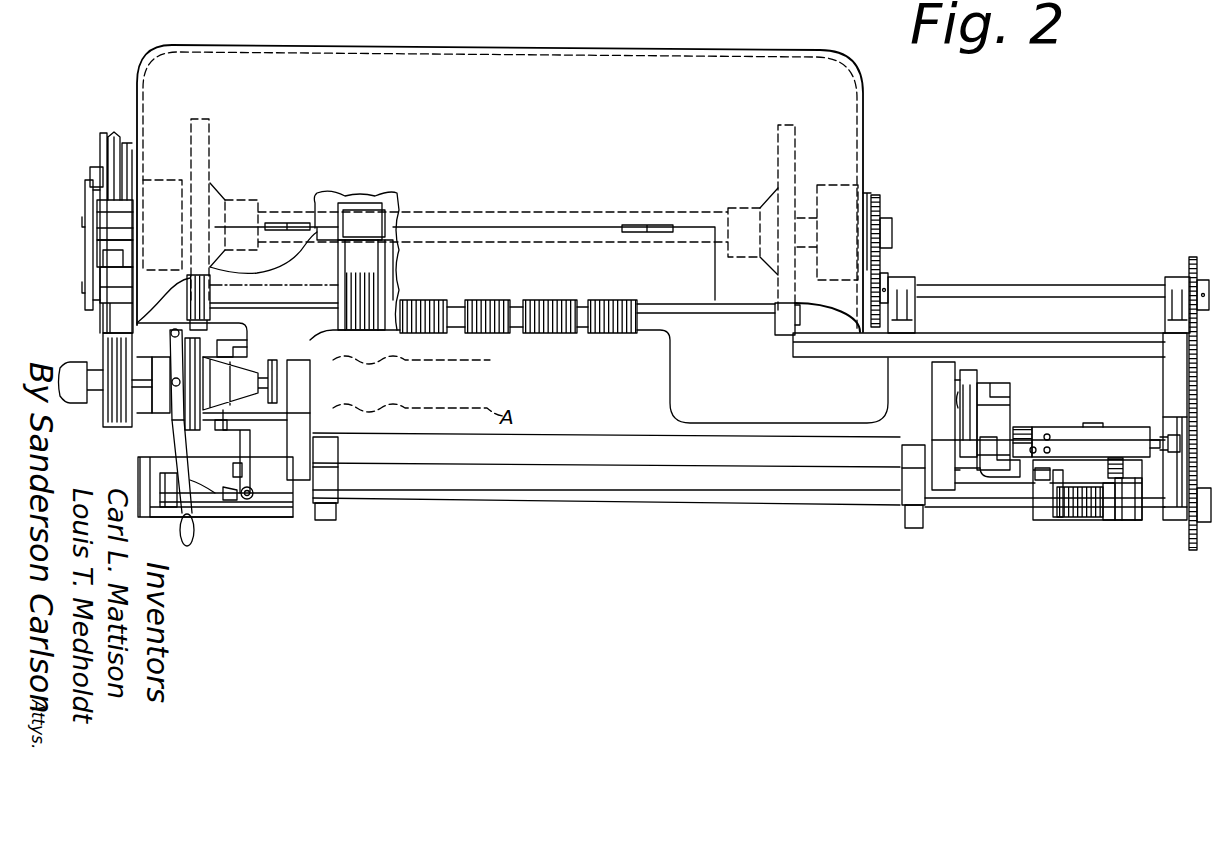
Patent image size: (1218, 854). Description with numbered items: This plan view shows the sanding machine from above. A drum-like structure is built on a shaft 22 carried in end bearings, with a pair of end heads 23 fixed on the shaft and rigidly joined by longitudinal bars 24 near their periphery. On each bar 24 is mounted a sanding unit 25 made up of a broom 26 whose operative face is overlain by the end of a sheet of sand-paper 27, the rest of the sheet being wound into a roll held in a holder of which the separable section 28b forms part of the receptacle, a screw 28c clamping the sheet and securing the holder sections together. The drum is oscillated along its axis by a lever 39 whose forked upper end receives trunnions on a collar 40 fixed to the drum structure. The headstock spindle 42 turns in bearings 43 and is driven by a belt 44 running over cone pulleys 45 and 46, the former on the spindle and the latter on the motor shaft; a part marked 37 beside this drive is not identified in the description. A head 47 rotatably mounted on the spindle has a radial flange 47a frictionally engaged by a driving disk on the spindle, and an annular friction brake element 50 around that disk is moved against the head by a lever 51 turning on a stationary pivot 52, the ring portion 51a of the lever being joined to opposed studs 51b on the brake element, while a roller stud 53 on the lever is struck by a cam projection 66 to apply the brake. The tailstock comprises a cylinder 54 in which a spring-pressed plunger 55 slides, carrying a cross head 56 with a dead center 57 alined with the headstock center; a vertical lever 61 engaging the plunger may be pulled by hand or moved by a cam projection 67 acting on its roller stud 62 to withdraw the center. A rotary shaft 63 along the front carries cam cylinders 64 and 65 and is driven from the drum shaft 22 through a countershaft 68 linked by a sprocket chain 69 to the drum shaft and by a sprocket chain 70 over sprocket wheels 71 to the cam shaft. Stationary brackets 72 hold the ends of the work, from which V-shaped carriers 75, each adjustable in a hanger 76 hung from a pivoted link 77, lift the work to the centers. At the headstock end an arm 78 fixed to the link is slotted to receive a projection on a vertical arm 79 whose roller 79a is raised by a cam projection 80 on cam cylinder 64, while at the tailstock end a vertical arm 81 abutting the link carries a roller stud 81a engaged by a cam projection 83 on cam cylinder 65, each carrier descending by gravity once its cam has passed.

The shaft 22 is at (553, 213).
The end heads 23 is at (209, 121).
The longitudinal bars 24 is at (300, 293).
The sanding unit 25 is at (375, 215).
The brush or broom 26 is at (467, 329).
The sheet of sand-paper 27 is at (600, 330).
The holder section 28b is at (352, 197).
The screw 28c is at (365, 207).
The plate 37 is at (90, 202).
The lever 39 is at (152, 151).
The collar 40 is at (117, 212).
The spindle 42 is at (146, 398).
The bearings 43 is at (157, 356).
The belt 44 is at (107, 330).
The cone pulley 45 is at (120, 410).
The cone pulley 46 is at (118, 137).
The head 47 is at (232, 373).
The radial flange 47a is at (223, 430).
The annular friction brake element 50 is at (187, 415).
The lever 51 is at (180, 532).
The ring portion 51a is at (172, 425).
The studs 51b is at (180, 380).
The stationary pivot 52 is at (175, 328).
The roller stud 53 is at (215, 502).
The cylinder 54 is at (1070, 426).
The plunger 55 is at (1027, 428).
The cross head 56 is at (992, 392).
The dead center 57 is at (980, 386).
The vertical lever 61 is at (1116, 458).
The roller stud 62 is at (1130, 512).
The rotary shaft 63 is at (615, 504).
The cam cylinder 64 is at (219, 517).
The cam cylinder 65 is at (1085, 517).
The cam projection 66 is at (167, 507).
The cam projection 67 is at (1109, 516).
The countershaft 68 is at (1027, 286).
The sprocket chain 69 is at (880, 263).
The sprocket chain 70 is at (1193, 257).
The sprocket wheels 71 is at (1189, 270).
The stationary brackets 72 is at (340, 478).
The V-shaped carriers 75 is at (300, 360).
The hanger 76 is at (932, 428).
The link 77 is at (990, 478).
The arm 78 is at (258, 440).
The vertical arm 79 is at (233, 468).
The roller 79a is at (252, 500).
The cam projection 80 is at (232, 500).
The vertical arm 81 is at (1076, 460).
The roller stud 81a is at (1040, 476).
The cam projection 83 is at (1057, 506).